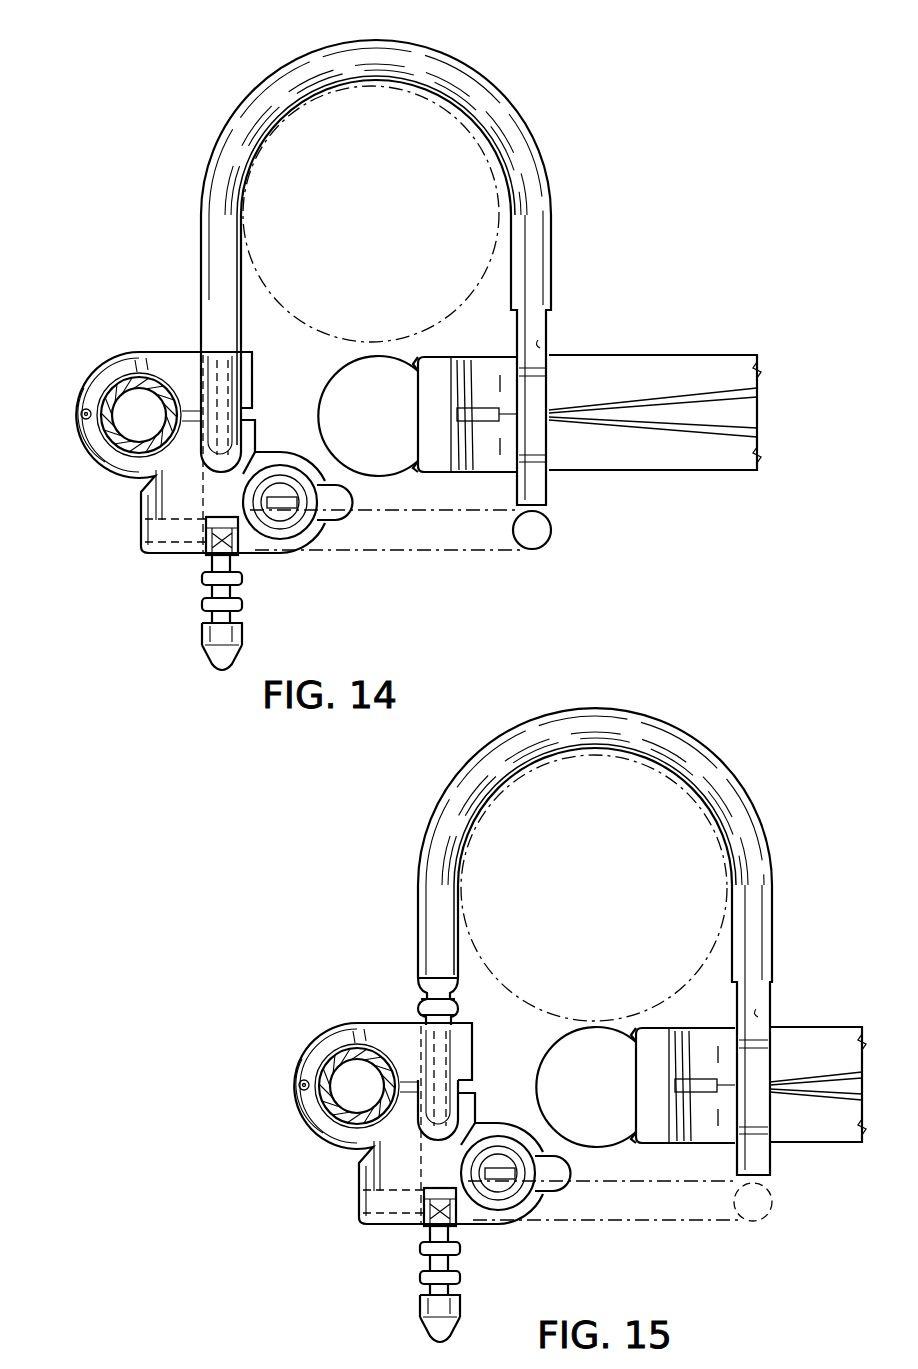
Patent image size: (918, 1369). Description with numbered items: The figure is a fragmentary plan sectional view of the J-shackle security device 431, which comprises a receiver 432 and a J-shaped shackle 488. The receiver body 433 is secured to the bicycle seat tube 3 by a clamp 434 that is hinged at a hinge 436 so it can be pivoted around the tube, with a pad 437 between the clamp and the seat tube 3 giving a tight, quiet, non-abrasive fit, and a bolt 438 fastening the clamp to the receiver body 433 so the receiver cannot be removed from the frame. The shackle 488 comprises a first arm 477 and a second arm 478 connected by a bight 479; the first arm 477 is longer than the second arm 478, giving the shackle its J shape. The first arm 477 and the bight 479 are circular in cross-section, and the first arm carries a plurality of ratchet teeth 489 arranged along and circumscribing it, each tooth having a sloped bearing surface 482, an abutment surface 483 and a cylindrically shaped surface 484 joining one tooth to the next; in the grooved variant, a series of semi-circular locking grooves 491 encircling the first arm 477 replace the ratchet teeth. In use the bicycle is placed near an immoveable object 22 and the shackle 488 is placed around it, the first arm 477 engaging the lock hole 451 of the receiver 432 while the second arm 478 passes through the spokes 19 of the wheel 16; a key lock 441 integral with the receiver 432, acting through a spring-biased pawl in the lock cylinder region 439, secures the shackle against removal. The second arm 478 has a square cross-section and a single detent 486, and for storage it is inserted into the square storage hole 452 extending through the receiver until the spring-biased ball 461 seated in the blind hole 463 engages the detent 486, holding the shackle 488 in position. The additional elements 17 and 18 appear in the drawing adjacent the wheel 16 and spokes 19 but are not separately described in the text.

In FIG. 14, the seat tube 3 is at (115, 388).
In FIG. 15, the seat tube 3 is at (330, 1060).
In FIG. 14, the wheel 16 is at (382, 352).
In FIG. 15, the wheel 16 is at (598, 1022).
In FIG. 14, the ball retaining edge 17 is at (363, 352).
In FIG. 15, the ball retaining edge 17 is at (578, 1024).
In FIG. 14, the cable end fitting 18 is at (450, 358).
In FIG. 15, the cable end fitting 18 is at (668, 1030).
In FIG. 14, the spokes 19 is at (710, 388).
In FIG. 15, the spokes 19 is at (846, 1090).
In FIG. 14, the immoveable object 22 is at (485, 162).
In FIG. 15, the immoveable object 22 is at (707, 838).
In FIG. 14, the security device 431 is at (266, 456).
In FIG. 15, the security device 431 is at (461, 1118).
In FIG. 14, the receiver 432 is at (99, 472).
In FIG. 15, the receiver 432 is at (316, 1142).
In FIG. 14, the receiver body 433 is at (97, 455).
In FIG. 15, the receiver body 433 is at (308, 1118).
In FIG. 14, the clamp 434 is at (126, 352).
In FIG. 15, the clamp 434 is at (356, 1028).
In FIG. 14, the hinge 436 is at (82, 412).
In FIG. 15, the hinge 436 is at (300, 1086).
In FIG. 14, the pad 437 is at (152, 380).
In FIG. 15, the pad 437 is at (338, 1055).
In FIG. 14, the bolt 438 is at (235, 380).
In FIG. 15, the bolt 438 is at (452, 1060).
In FIG. 14, the lock cylinder 439 is at (300, 523).
In FIG. 15, the lock cylinder 439 is at (538, 1205).
In FIG. 14, the key lock 441 is at (286, 510).
In FIG. 15, the key lock 441 is at (505, 1190).
In FIG. 14, the lock hole 451 is at (258, 462).
In FIG. 15, the lock hole 451 is at (476, 1130).
In FIG. 14, the storage hole 452 is at (207, 547).
In FIG. 15, the storage hole 452 is at (428, 1218).
In FIG. 14, the ball 461 is at (148, 560).
In FIG. 15, the ball 461 is at (388, 1230).
In FIG. 14, the blind hole 463 is at (137, 543).
In FIG. 15, the blind hole 463 is at (365, 1213).
In FIG. 14, the first arm 477 is at (205, 243).
In FIG. 15, the first arm 477 is at (425, 932).
In FIG. 14, the second arm 478 is at (540, 483).
In FIG. 15, the second arm 478 is at (768, 940).
In FIG. 14, the bight 479 is at (437, 57).
In FIG. 15, the bight 479 is at (578, 712).
In FIG. 14, the sloped bearing surface 482 is at (240, 583).
In FIG. 14, the abutment surface 483 is at (205, 590).
In FIG. 14, the cylindrically shaped surface 484 is at (200, 622).
In FIG. 14, the detent 486 is at (550, 345).
In FIG. 15, the detent 486 is at (767, 1005).
In FIG. 14, the shackle 488 is at (395, 312).
In FIG. 15, the shackle 488 is at (592, 972).
In FIG. 14, the ratchet teeth 489 is at (243, 608).
In FIG. 15, the semi-circular locking grooves 491 is at (460, 1285).